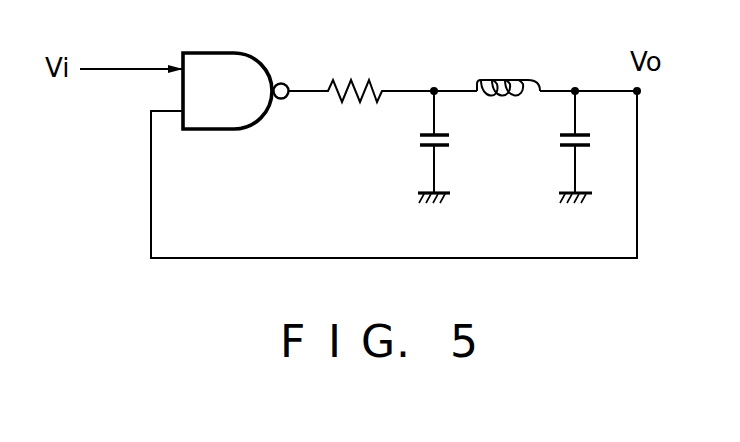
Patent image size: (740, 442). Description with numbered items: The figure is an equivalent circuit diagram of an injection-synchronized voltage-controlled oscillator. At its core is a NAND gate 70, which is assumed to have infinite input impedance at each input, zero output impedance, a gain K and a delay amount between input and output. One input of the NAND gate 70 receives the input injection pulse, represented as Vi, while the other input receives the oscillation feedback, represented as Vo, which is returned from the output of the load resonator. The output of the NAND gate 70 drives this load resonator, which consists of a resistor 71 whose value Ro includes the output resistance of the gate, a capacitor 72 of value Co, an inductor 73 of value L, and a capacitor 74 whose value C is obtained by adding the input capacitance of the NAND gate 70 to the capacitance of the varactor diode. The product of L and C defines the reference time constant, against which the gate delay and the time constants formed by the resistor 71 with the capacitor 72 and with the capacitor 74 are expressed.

The NAND gate 70 is at (230, 53).
The resistor 71 is at (350, 97).
The capacitor 72 is at (448, 153).
The inductor 73 is at (531, 76).
The capacitor 74 is at (588, 153).